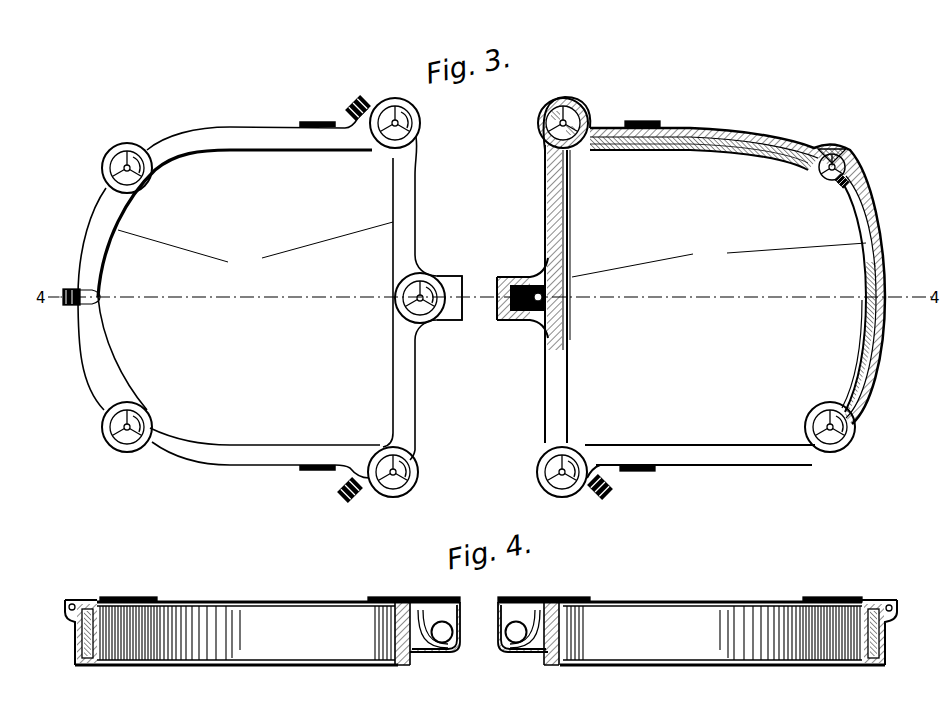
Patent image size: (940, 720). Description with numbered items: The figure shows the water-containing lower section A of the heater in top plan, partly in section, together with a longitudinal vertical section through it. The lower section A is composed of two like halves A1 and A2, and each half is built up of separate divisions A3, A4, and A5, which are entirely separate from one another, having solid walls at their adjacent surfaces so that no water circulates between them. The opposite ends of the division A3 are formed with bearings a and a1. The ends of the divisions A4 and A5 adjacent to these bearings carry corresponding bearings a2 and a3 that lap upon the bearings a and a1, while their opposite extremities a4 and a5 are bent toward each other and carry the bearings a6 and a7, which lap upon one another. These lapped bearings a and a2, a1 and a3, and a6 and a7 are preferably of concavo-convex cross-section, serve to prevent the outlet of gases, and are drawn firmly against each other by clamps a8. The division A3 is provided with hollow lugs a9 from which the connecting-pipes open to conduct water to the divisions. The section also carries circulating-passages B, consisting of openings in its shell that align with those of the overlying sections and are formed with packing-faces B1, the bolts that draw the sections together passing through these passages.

In FIG. 3, the bearing a is at (390, 108).
In FIG. 3, the bearing a1 is at (405, 462).
In FIG. 3, the bearing a2 is at (368, 146).
In FIG. 3, the bearing a3 is at (380, 452).
In FIG. 3, the extremity a4 is at (98, 263).
In FIG. 4, the extremity a4 is at (76, 618).
In FIG. 3, the extremity a5 is at (108, 374).
In FIG. 3, the bearing a6 is at (100, 293).
In FIG. 3, the bearing a7 is at (98, 306).
In FIG. 3, the clamp a8 is at (70, 290).
In FIG. 4, the clamp a8 is at (73, 603).
In FIG. 3, the hollow lug a9 is at (498, 287).
In FIG. 4, the hollow lug a9 is at (498, 640).
In FIG. 3, the lower section A is at (217, 156).
In FIG. 4, the lower section A is at (285, 602).
In FIG. 3, the section-half A1 is at (236, 261).
In FIG. 4, the section-half A1 is at (234, 602).
In FIG. 3, the section-half A2 is at (719, 325).
In FIG. 4, the section-half A2 is at (740, 602).
In FIG. 3, the section-division A3 is at (407, 257).
In FIG. 4, the section-division A3 is at (402, 668).
In FIG. 3, the section-division A4 is at (280, 152).
In FIG. 4, the section-division A4 is at (252, 667).
In FIG. 3, the section-division A5 is at (233, 449).
In FIG. 4, the section-division A5 is at (642, 625).
In FIG. 3, the circulating-passage B is at (128, 153).
In FIG. 4, the circulating-passage B is at (428, 600).
In FIG. 3, the packing-face B1 is at (137, 190).
In FIG. 4, the packing-face B1 is at (125, 598).